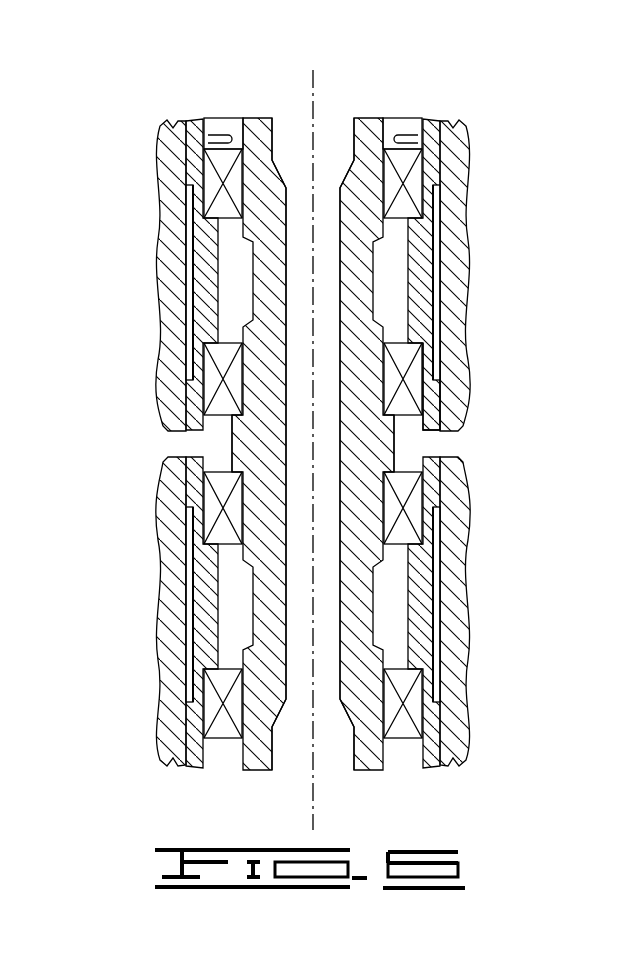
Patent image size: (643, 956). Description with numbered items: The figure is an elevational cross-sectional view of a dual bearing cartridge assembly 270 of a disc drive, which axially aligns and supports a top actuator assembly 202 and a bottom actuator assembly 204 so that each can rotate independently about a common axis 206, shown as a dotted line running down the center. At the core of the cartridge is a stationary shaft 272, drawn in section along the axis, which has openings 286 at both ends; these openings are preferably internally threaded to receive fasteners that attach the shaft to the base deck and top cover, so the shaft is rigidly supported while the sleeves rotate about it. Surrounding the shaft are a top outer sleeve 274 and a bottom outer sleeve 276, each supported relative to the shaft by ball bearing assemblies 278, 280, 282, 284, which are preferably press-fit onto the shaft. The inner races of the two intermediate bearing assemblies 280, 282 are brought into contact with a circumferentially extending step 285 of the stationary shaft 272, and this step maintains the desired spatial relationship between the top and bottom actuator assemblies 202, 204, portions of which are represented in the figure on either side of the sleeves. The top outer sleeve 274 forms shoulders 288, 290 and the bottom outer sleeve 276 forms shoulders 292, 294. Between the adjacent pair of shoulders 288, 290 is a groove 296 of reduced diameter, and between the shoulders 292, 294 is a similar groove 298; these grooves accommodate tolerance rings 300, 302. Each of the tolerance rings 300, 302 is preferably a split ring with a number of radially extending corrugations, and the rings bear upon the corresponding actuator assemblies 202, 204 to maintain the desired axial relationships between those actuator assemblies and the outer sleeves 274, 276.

The top actuator assembly 202 is at (172, 144).
The bottom actuator assembly 204 is at (170, 463).
The common axis 206 is at (318, 85).
The dual bearing cartridge assembly 270 is at (476, 101).
The stationary shaft 272 is at (262, 132).
The top outer sleeve 274 is at (196, 122).
The bottom outer sleeve 276 is at (190, 762).
The ball bearing assembly 278 is at (213, 186).
The ball bearing assembly 280 is at (215, 378).
The ball bearing assembly 282 is at (210, 512).
The ball bearing assembly 284 is at (210, 705).
The circumferentially extending step 285 is at (397, 452).
The openings 286 is at (333, 133).
The shoulder 288 is at (432, 168).
The shoulder 290 is at (434, 405).
The shoulder 292 is at (433, 485).
The shoulder 294 is at (441, 742).
The groove 296 is at (434, 290).
The groove 298 is at (434, 598).
The tolerance ring 300 is at (193, 318).
The tolerance ring 302 is at (191, 606).